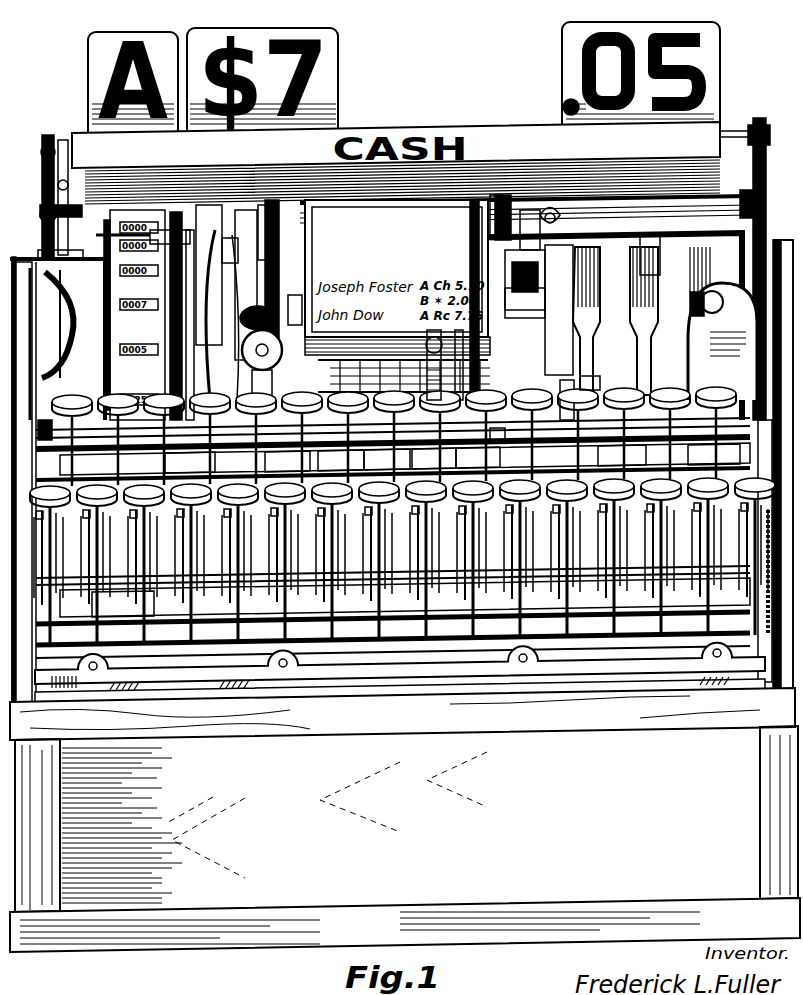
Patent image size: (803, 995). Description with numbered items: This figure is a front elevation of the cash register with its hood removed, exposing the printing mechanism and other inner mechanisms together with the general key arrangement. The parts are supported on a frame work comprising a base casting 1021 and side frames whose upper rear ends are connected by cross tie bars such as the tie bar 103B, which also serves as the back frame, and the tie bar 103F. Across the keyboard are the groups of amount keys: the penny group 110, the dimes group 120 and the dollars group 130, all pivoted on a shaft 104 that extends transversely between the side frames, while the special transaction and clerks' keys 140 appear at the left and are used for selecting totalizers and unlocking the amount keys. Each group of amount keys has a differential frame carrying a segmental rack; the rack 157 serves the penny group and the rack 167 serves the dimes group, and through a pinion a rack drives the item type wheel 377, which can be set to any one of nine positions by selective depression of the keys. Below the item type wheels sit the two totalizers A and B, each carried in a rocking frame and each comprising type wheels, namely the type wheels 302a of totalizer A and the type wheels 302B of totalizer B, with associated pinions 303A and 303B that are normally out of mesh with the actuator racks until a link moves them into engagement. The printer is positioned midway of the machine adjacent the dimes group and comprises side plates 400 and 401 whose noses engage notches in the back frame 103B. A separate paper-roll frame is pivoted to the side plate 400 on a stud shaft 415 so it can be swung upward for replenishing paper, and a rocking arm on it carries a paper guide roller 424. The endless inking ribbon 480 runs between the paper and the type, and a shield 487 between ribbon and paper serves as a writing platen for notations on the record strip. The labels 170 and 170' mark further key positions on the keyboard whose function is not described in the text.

The stud shaft 415 is at (233, 245).
The side plate 400 is at (268, 242).
The paper guide roller 424 is at (497, 197).
The side plate 401 is at (571, 248).
The tie bar 103B is at (653, 238).
The endless inking ribbon 480 is at (305, 268).
The shield 487 is at (300, 300).
The type wheels 302a is at (400, 345).
The item type wheel 377 is at (540, 313).
The segmental rack 157 is at (448, 363).
The key 170 is at (446, 408).
The pinions 303A is at (587, 375).
The segmental rack 167 is at (500, 443).
The tie bar 103F is at (190, 462).
The type wheels 302B is at (341, 460).
The pinions 303B is at (387, 459).
The totalizer A is at (434, 458).
The totalizer B is at (478, 457).
The dollars group of keys 130 is at (598, 456).
The key 170' is at (714, 454).
The special keys 140 is at (45, 436).
The shaft 104 is at (158, 600).
The dimes group of keys 120 is at (492, 574).
The penny group of keys 110 is at (688, 569).
The base casting 1021 is at (412, 735).